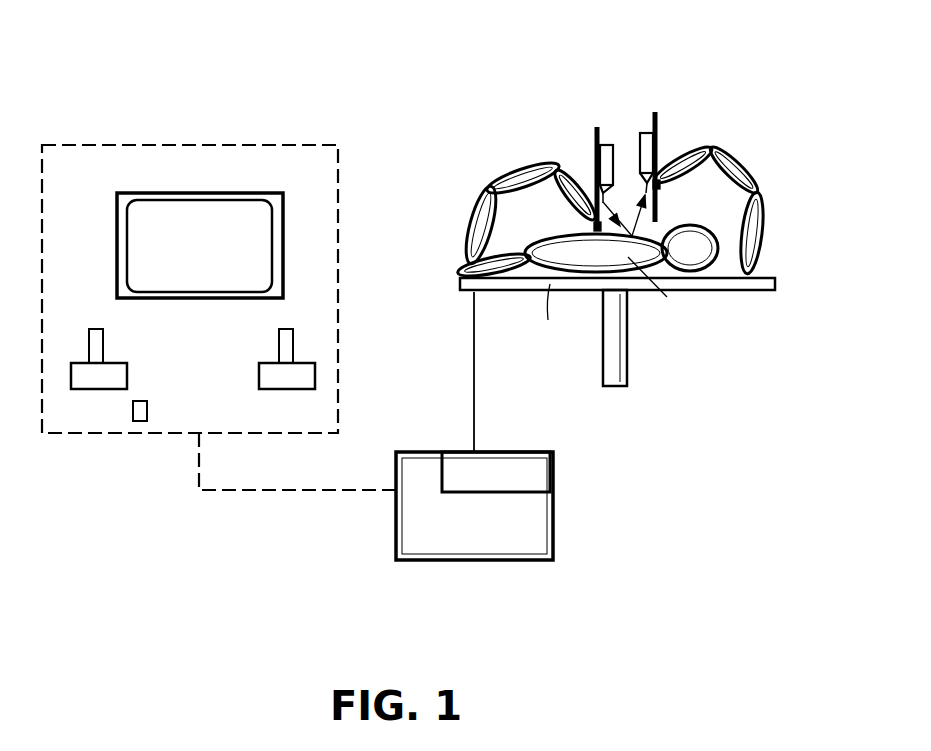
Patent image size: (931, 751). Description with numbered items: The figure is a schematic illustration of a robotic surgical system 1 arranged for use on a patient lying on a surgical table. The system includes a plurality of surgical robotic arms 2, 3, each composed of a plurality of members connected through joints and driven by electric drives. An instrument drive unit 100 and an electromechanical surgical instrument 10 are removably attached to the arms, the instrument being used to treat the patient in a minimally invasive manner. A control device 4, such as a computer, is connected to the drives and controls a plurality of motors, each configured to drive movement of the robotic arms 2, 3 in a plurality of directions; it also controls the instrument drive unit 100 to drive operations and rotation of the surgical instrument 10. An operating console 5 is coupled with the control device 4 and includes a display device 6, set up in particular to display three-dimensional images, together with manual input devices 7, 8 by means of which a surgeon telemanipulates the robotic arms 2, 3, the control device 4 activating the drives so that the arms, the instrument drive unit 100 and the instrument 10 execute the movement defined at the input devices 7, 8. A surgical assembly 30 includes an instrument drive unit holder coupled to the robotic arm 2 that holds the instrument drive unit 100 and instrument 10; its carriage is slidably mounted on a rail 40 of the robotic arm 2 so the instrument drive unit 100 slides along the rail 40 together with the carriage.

The robotic surgical system 1 is at (691, 491).
The surgical robotic arm 2 is at (493, 182).
The surgical robotic arm 3 is at (750, 140).
The control device 4 is at (474, 426).
The operating console 5 is at (125, 100).
The display device 6 is at (200, 245).
The manual input device 7 is at (83, 378).
The manual input device 8 is at (285, 378).
The electromechanical surgical instrument 10 is at (660, 263).
The surgical assembly 30 is at (582, 225).
The rail 40 is at (595, 135).
The instrument drive unit 100 is at (635, 116).